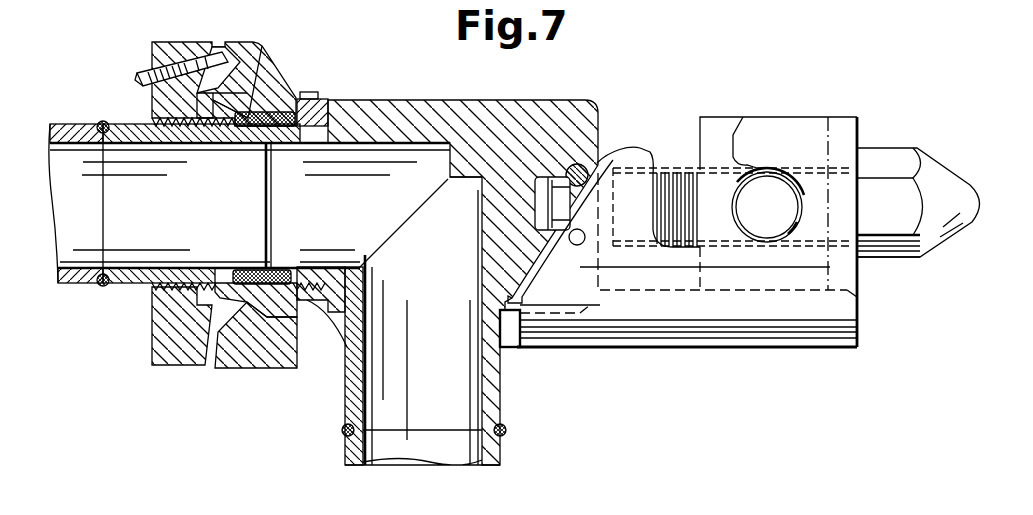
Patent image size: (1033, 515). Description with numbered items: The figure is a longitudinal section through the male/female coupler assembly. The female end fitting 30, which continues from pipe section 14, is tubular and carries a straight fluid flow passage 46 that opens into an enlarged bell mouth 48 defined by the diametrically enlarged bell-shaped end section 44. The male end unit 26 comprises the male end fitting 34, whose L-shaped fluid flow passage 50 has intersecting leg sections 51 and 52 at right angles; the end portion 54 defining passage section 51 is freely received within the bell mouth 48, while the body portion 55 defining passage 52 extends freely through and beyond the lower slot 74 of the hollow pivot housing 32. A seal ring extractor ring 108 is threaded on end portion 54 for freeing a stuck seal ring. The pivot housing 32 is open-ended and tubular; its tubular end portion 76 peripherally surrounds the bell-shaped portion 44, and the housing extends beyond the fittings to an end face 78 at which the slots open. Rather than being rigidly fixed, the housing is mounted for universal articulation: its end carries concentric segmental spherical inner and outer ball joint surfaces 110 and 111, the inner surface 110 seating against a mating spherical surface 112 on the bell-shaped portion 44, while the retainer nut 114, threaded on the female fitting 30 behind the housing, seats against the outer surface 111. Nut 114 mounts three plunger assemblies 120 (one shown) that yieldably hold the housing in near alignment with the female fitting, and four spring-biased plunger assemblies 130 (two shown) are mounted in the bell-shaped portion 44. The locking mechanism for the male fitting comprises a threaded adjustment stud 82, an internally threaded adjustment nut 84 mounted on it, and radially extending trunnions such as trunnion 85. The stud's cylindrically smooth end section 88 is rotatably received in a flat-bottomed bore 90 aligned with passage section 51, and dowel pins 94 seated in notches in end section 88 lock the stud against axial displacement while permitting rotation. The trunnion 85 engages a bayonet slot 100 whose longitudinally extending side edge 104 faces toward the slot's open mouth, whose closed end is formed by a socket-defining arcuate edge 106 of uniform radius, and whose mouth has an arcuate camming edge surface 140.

The pipe section 14 is at (67, 125).
The fluid flow passage 46 is at (152, 200).
The retainer nut 114 is at (163, 42).
The outer ball joint surface 111 is at (201, 43).
The tubular end portion 76 is at (256, 44).
The plunger assemblies 120 is at (137, 70).
The ball joint surface 112 is at (244, 100).
The inner ball joint surface 110 is at (233, 128).
The spring-biased plunger assemblies 130 is at (257, 270).
The bell mouth 48 is at (277, 130).
The bell-shaped end section 44 is at (280, 95).
The end portion 54 is at (311, 110).
The seal ring extractor ring 108 is at (325, 108).
The male end unit 26 is at (358, 100).
The male end fitting 34 is at (432, 100).
The passage leg section 51 is at (322, 226).
The passage leg section 52 is at (433, 366).
The body portion 55 is at (345, 405).
The L-shaped fluid flow passage 50 is at (323, 267).
The female end fitting 30 is at (133, 287).
The end section 88 is at (602, 190).
The bore 90 is at (537, 185).
The dowel pins 94 is at (586, 233).
The pivot housing 32 is at (645, 348).
The slot 74 is at (510, 340).
The side edge 104 is at (700, 240).
The adjustment nut 84 is at (703, 117).
The camming edge surface 140 is at (733, 136).
The trunnion 85 is at (767, 172).
The arcuate edge 106 is at (768, 184).
The bayonet slot 100 is at (797, 204).
The end face 78 is at (857, 326).
The threaded adjustment stud 82 is at (892, 152).